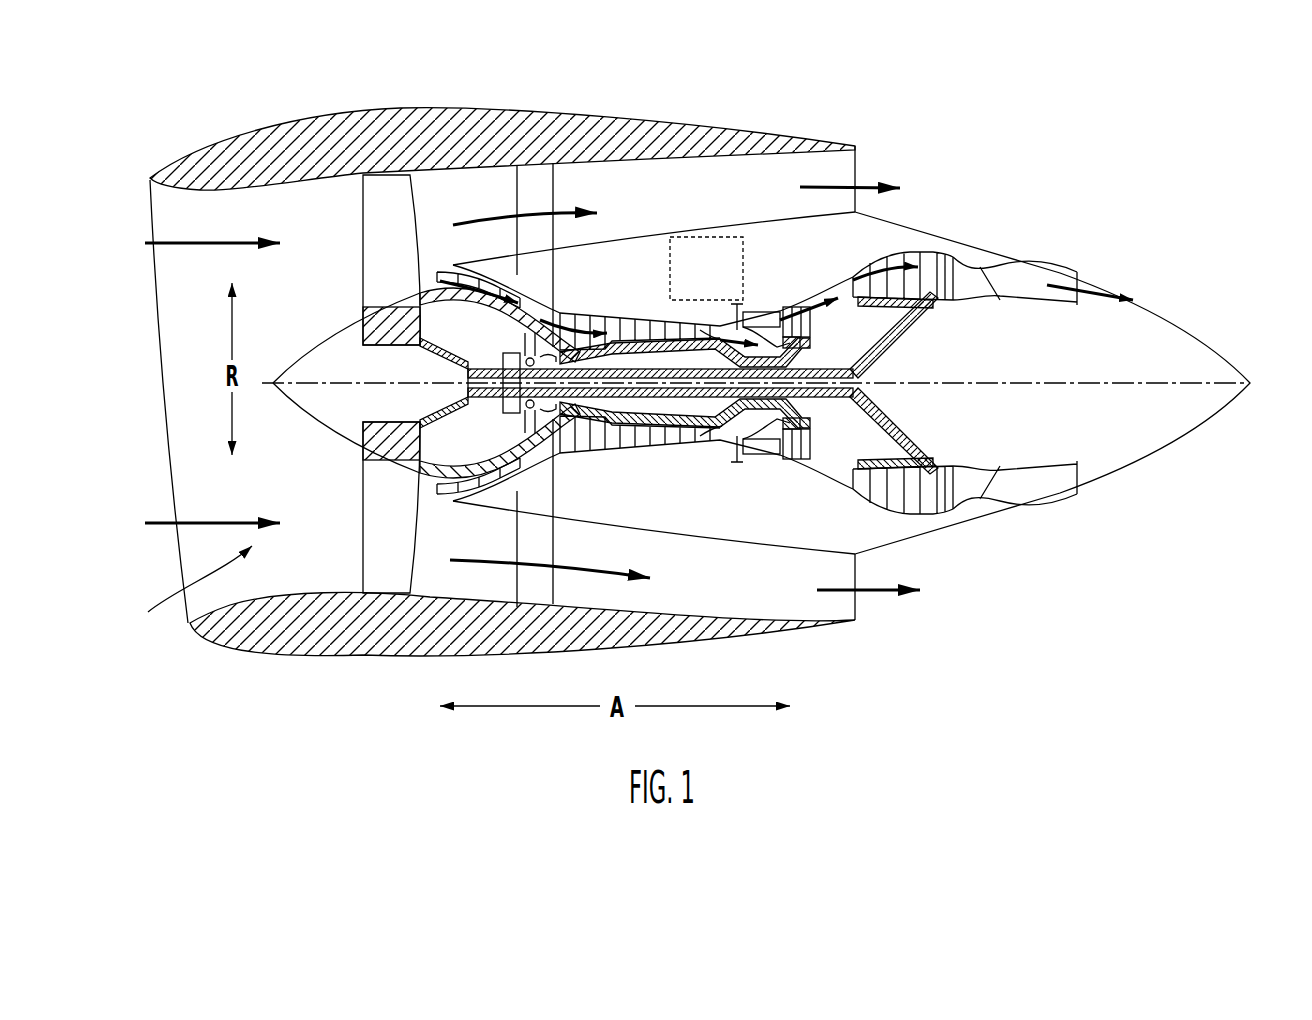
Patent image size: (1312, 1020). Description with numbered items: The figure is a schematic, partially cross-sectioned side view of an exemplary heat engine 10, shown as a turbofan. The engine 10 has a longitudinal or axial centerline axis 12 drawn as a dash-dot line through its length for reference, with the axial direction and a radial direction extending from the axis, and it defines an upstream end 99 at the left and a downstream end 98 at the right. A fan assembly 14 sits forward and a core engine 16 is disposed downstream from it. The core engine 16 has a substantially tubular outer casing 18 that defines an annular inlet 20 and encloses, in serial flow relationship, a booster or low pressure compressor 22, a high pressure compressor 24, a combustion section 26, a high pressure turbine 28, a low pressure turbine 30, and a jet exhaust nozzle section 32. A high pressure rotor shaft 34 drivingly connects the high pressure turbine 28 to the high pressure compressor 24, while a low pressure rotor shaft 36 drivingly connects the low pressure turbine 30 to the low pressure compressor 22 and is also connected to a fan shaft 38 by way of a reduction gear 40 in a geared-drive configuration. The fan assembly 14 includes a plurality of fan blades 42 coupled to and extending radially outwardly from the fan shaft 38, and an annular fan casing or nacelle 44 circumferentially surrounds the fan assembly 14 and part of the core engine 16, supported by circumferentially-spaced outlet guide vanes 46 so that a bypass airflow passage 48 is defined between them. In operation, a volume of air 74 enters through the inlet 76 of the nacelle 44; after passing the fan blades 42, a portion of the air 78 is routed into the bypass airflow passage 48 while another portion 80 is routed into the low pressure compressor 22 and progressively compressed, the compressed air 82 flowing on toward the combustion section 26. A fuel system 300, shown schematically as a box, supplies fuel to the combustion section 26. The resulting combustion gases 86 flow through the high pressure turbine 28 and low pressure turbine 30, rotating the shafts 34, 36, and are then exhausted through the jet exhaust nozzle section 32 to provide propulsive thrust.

The heat engine 10 is at (995, 133).
The axial centerline axis 12 is at (1022, 383).
The fan assembly 14 is at (438, 190).
The core engine 16 is at (748, 212).
The outer casing 18 is at (708, 553).
The annular inlet 20 is at (457, 492).
The low pressure compressor 22 is at (499, 462).
The high pressure compressor 24 is at (583, 442).
The combustion section 26 is at (757, 447).
The high pressure turbine 28 is at (813, 450).
The low pressure turbine 30 is at (937, 520).
The jet exhaust nozzle section 32 is at (1002, 495).
The high pressure rotor shaft 34 is at (808, 350).
The low pressure rotor shaft 36 is at (893, 338).
The fan shaft 38 is at (413, 357).
The reduction gear 40 is at (507, 351).
The fan blades 42 is at (383, 213).
The nacelle 44 is at (357, 117).
The outlet guide vanes 46 is at (540, 197).
The bypass airflow passage 48 is at (655, 214).
The volume of air 74 is at (187, 243).
The inlet 76 is at (190, 594).
The bypass air 78 is at (503, 213).
The core air 80 is at (452, 264).
The compressed air 82 is at (558, 322).
The combustion gases 86 is at (880, 262).
The downstream end 98 is at (1268, 369).
The upstream end 99 is at (108, 385).
The fuel system 300 is at (690, 285).